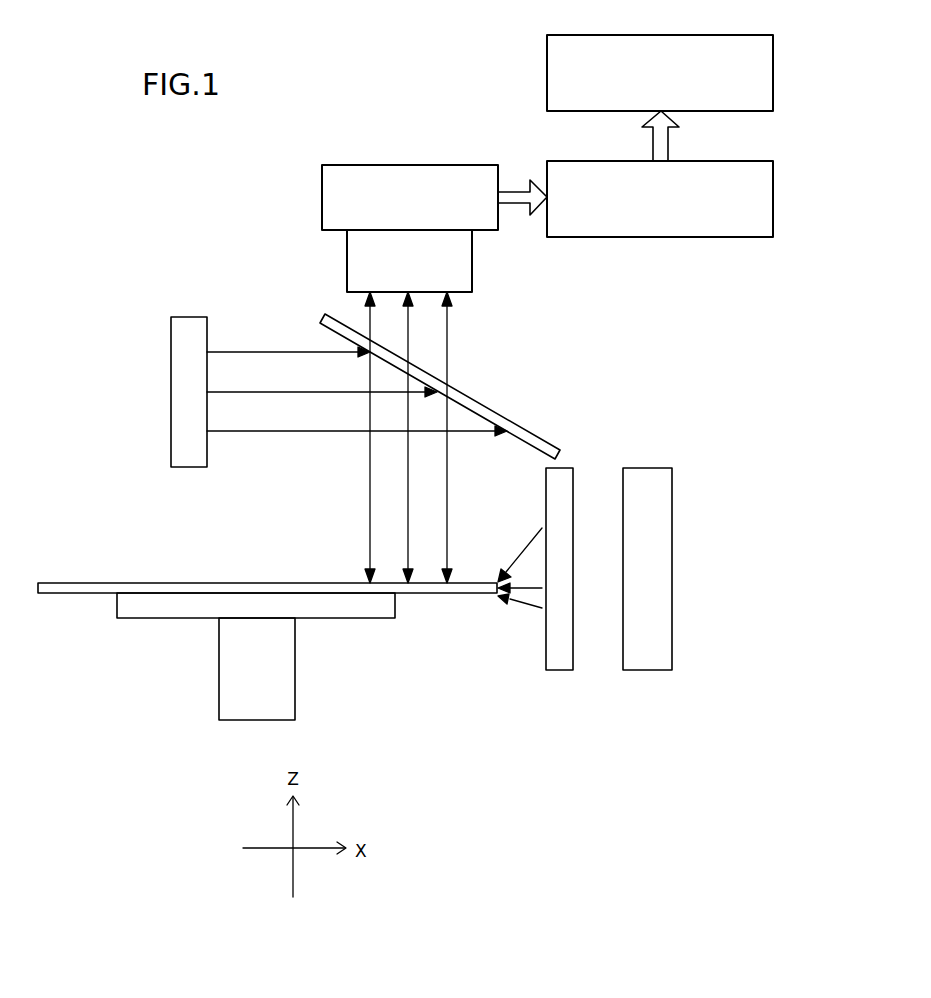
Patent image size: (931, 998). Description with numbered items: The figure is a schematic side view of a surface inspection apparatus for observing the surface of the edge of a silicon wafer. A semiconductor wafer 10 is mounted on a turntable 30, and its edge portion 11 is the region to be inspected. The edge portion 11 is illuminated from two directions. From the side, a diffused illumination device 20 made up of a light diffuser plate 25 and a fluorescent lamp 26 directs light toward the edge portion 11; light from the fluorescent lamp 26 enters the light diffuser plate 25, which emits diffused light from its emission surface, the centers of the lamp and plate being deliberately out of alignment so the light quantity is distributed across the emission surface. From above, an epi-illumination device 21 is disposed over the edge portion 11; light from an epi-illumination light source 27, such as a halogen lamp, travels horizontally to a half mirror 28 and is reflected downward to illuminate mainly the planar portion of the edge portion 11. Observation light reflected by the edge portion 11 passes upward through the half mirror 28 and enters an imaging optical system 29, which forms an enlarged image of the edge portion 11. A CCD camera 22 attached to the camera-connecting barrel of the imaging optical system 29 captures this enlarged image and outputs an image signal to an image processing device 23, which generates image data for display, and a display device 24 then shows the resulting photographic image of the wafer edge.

The semiconductor wafer 10 is at (92, 583).
The edge portion 11 is at (487, 598).
The diffused illumination device 20 is at (608, 620).
The epi-illumination device 21 is at (155, 280).
The CCD camera 22 is at (340, 165).
The image processing device 23 is at (773, 185).
The display device 24 is at (773, 57).
The light diffuser plate 25 is at (559, 593).
The fluorescent lamp 26 is at (647, 593).
The epi-illumination light source 27 is at (190, 317).
The half mirror 28 is at (322, 326).
The imaging optical system 29 is at (472, 280).
The turntable 30 is at (219, 668).